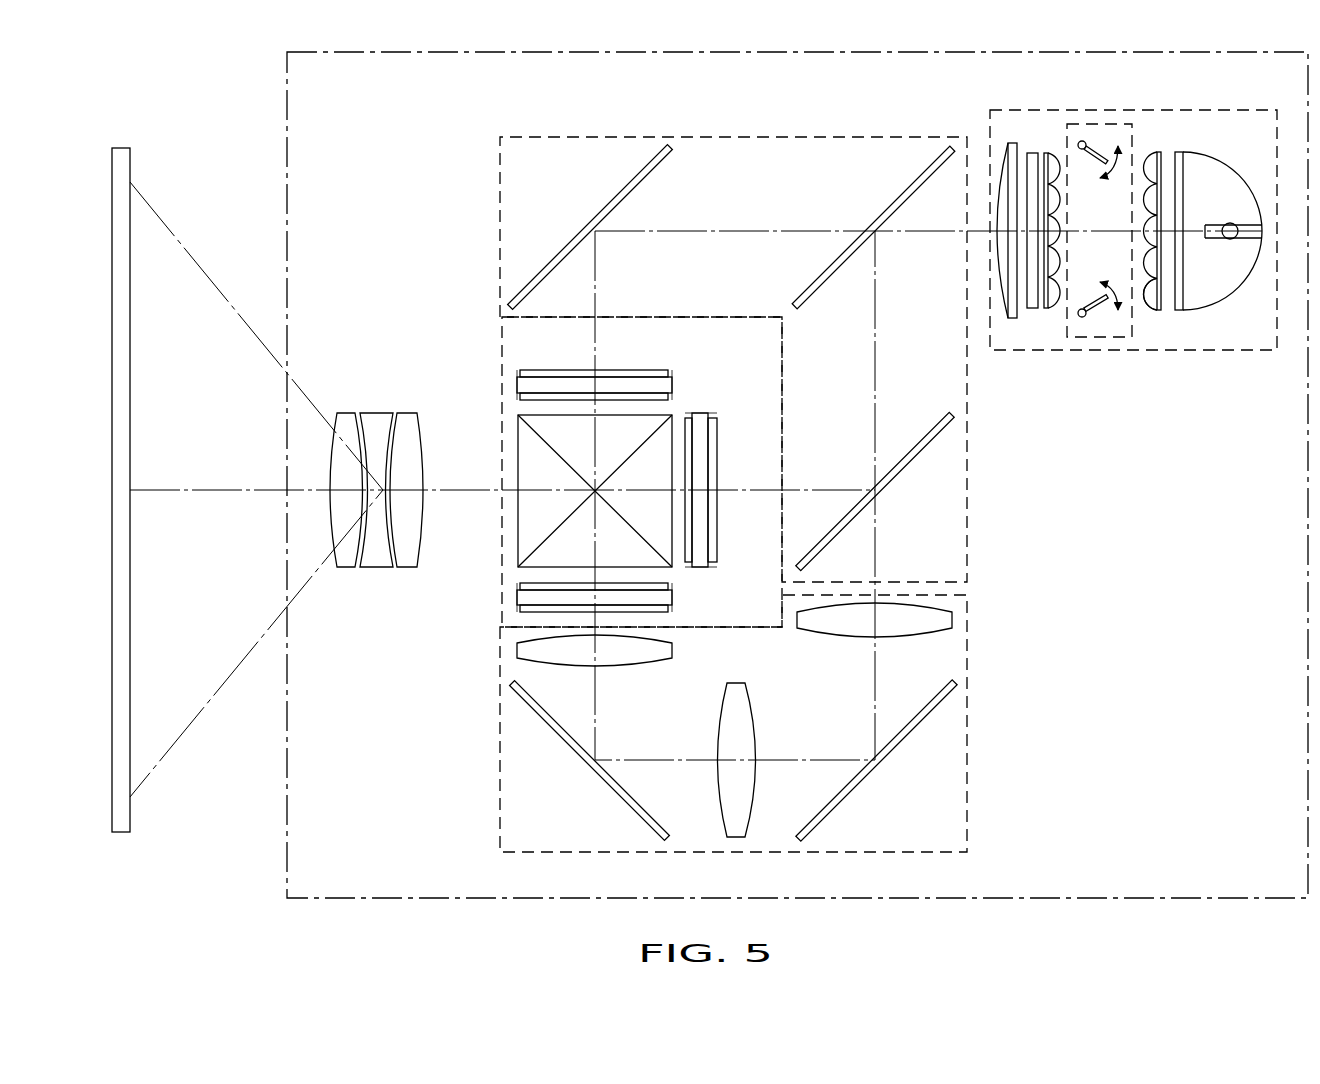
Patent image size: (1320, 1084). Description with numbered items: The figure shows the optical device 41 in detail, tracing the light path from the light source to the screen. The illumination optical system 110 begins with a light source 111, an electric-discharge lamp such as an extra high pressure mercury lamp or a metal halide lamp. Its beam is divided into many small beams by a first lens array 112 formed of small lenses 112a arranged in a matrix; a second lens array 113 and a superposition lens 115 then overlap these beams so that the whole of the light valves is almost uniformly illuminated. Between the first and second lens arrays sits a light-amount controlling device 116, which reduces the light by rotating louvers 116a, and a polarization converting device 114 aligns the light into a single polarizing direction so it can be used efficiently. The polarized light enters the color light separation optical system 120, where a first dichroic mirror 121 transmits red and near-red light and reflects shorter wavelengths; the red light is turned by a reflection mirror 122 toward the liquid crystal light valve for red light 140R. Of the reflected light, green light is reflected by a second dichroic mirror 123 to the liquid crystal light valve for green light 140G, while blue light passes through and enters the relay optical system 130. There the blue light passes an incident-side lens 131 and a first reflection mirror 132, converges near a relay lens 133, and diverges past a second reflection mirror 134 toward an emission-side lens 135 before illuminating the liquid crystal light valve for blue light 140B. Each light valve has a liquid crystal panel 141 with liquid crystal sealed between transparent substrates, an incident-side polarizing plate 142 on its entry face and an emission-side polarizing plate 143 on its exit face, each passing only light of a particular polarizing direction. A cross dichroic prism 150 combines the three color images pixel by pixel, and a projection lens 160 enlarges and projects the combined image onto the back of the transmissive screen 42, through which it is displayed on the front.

The optical device 41 is at (287, 108).
The transmissive screen 42 is at (122, 148).
The illumination optical system 110 is at (1240, 108).
The light source 111 is at (1215, 172).
The first lens array 112 is at (1160, 302).
The small lens 112a is at (1157, 305).
The second lens array 113 is at (1052, 307).
The polarization converting device 114 is at (1032, 153).
The superposition lens 115 is at (1010, 147).
The light-amount controlling device 116 is at (1090, 340).
The louver 116a is at (1092, 138).
The color light separation optical system 120 is at (705, 137).
The first dichroic mirror 121 is at (897, 204).
The reflection mirror 122 is at (618, 199).
The second dichroic mirror 123 is at (927, 450).
The relay optical system 130 is at (967, 712).
The incident-side lens 131 is at (945, 620).
The first reflection mirror 132 is at (837, 805).
The relay lens 133 is at (737, 823).
The second reflection mirror 134 is at (633, 805).
The emission-side lens 135 is at (527, 650).
The liquid crystal light valve for red light 140R is at (684, 385).
The liquid crystal light valve for green light 140G is at (685, 410).
The liquid crystal light valve for blue light 140B is at (674, 580).
The liquid crystal panel 141 is at (520, 385).
The incident-side polarizing plate 142 is at (525, 373).
The emission-side polarizing plate 143 is at (520, 397).
The cross dichroic prism 150 is at (535, 530).
The projection lens 160 is at (415, 410).